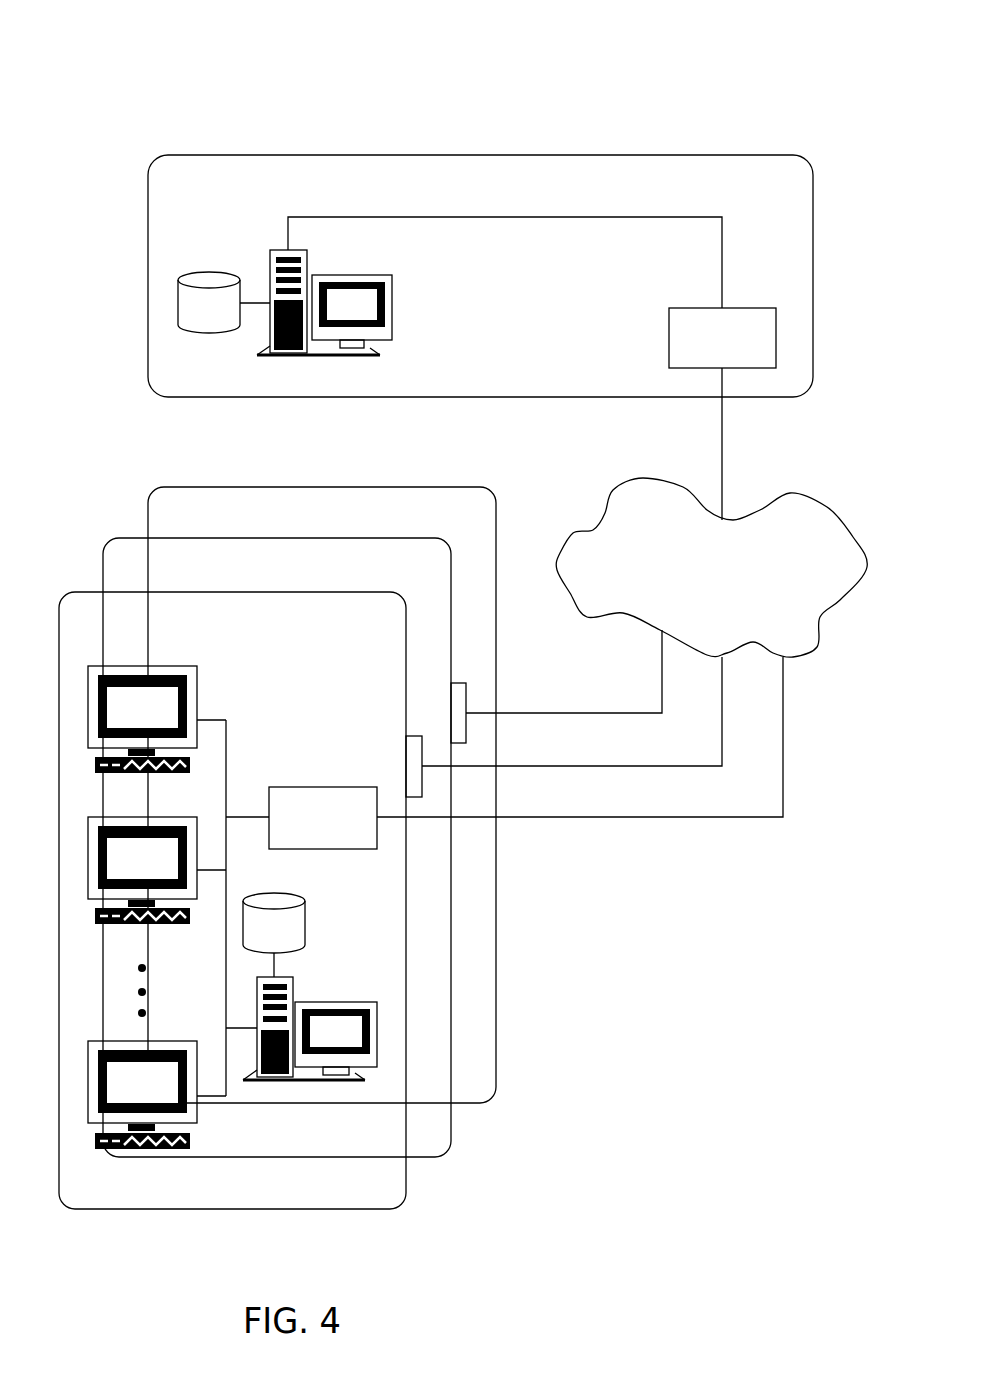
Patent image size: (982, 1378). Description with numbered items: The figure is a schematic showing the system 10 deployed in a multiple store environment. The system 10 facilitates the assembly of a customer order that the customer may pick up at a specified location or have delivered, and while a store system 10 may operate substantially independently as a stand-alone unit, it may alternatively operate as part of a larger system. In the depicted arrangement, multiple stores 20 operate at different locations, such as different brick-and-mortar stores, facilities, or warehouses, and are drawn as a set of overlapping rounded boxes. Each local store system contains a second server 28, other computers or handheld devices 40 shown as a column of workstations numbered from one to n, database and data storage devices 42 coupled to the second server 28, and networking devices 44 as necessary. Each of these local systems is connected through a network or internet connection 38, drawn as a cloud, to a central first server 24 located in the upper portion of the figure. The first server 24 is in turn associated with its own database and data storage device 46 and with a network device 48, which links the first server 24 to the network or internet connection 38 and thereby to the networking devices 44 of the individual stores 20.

The system 10 is at (436, 125).
The stores 20 is at (180, 503).
The first server 24 is at (386, 270).
The second server 28 is at (328, 990).
The network or internet connection 38 is at (711, 567).
The other computers or handheld devices 40 is at (214, 676).
The database and data storage devices 42 is at (274, 935).
The networking devices 44 is at (323, 818).
The database and data storage device 46 is at (209, 302).
The network device 48 is at (722, 338).